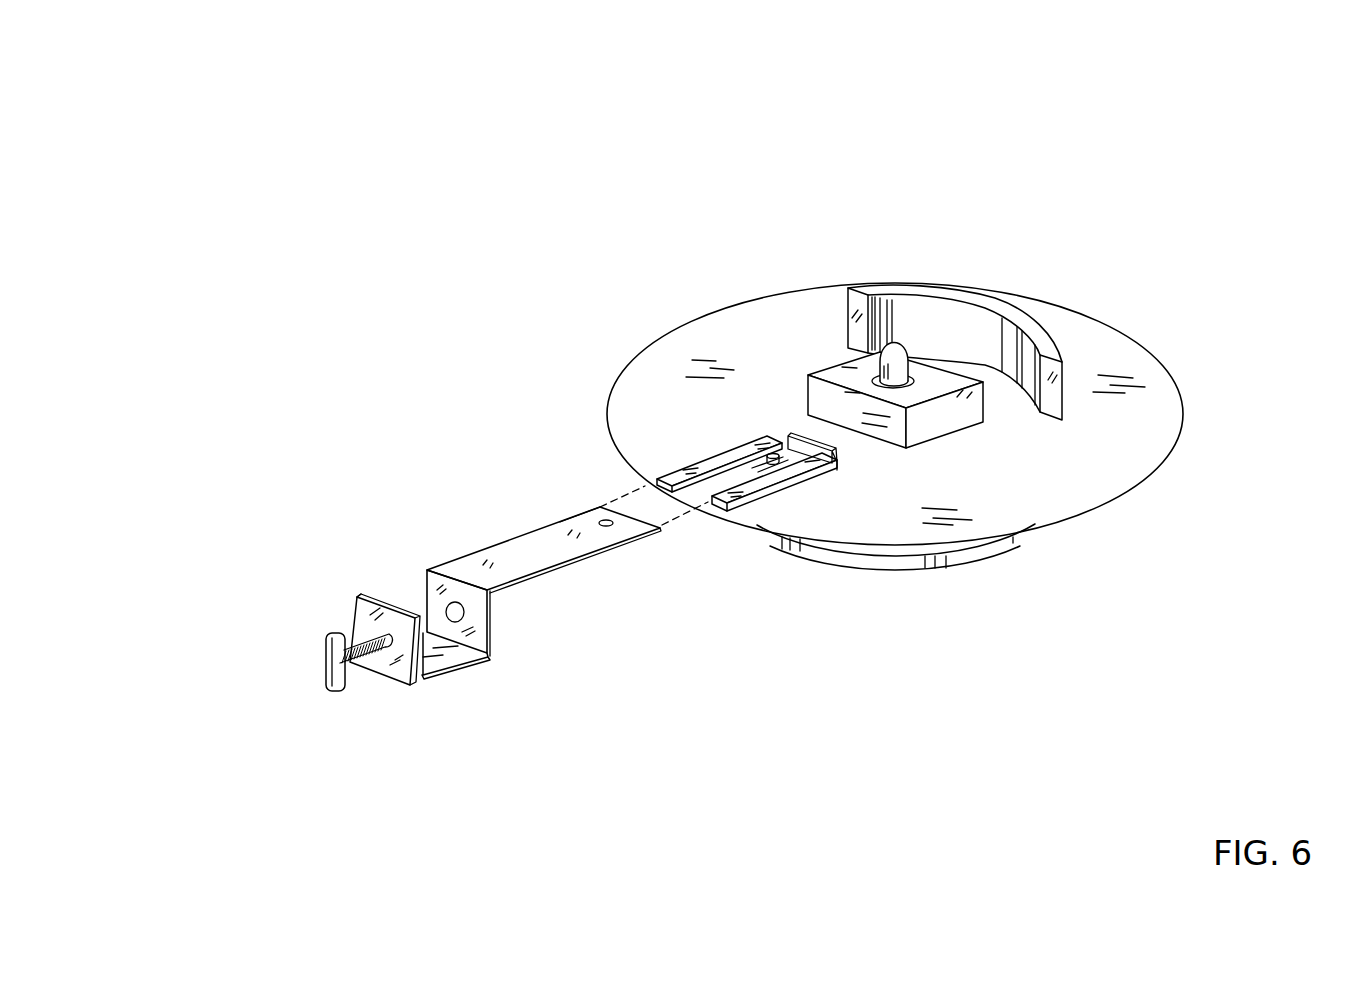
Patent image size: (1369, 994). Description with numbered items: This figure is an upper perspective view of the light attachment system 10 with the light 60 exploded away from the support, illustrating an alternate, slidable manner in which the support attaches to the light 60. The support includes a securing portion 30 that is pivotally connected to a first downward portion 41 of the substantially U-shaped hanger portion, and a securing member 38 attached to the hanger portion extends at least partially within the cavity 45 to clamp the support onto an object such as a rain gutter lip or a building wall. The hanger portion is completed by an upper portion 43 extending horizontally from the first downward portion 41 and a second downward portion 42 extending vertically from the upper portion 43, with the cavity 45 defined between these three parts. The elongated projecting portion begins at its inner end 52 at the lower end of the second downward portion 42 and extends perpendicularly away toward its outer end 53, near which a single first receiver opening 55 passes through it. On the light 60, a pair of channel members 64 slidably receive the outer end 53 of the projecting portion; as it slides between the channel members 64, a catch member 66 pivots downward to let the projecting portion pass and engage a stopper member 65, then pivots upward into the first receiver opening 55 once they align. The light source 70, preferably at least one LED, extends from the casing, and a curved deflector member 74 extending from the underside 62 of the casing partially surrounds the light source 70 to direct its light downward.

The light attachment system 10 is at (253, 150).
The securing portion 30 is at (352, 602).
The securing member 38 is at (325, 662).
The first downward portion 41 is at (417, 684).
The second downward portion 42 is at (492, 624).
The upper portion 43 is at (452, 676).
The cavity 45 is at (415, 597).
The inner end 52 is at (452, 560).
The outer end 53 is at (590, 508).
The first receiver opening 55 is at (608, 528).
The light 60 is at (1178, 448).
The underside 62 is at (1083, 490).
The channel members 64 is at (697, 467).
The stopper member 65 is at (792, 437).
The catch member 66 is at (790, 462).
The light source 70 is at (897, 348).
The deflector member 74 is at (1053, 333).